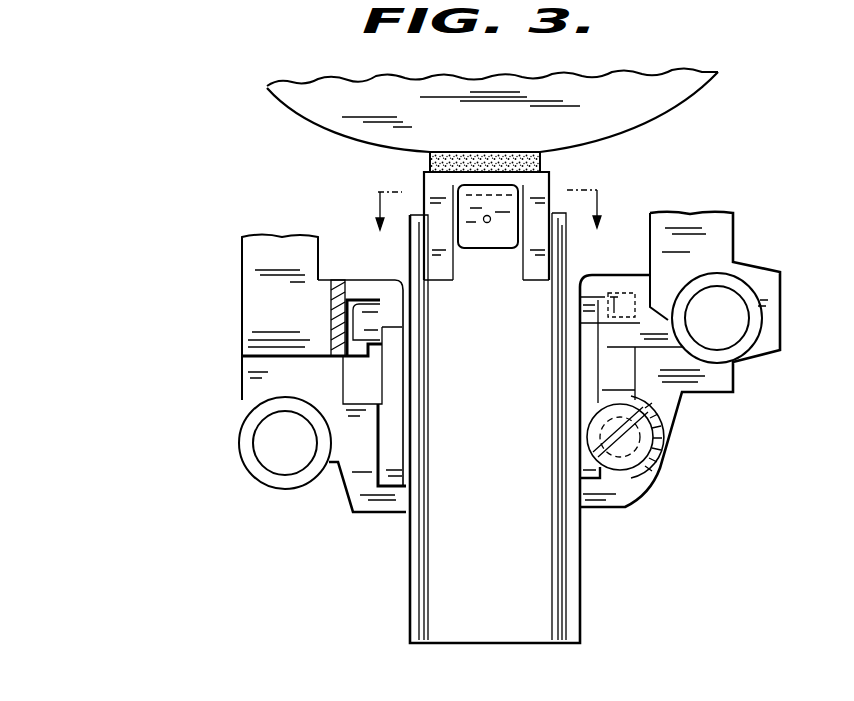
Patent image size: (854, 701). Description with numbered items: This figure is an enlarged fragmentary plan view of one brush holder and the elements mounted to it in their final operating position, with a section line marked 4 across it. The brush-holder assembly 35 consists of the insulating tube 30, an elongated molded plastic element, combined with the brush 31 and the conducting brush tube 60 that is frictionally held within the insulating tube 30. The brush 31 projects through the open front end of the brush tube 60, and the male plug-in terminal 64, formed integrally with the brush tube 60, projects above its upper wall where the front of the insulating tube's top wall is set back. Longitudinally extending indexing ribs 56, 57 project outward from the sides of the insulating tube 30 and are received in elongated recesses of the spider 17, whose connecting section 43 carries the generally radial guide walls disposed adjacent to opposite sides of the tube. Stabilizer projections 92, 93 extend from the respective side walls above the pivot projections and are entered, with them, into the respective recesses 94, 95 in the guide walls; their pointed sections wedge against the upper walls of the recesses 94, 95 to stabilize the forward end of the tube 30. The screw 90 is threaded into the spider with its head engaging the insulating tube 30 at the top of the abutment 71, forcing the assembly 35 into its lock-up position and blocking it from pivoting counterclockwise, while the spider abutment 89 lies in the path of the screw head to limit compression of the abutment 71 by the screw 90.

The spider 17 is at (280, 492).
The insulating tube 30 is at (582, 592).
The brush 31 is at (550, 159).
The brush-holder assembly 35 is at (395, 594).
The connecting section 43 is at (362, 482).
The indexing rib 56 is at (383, 363).
The indexing rib 57 is at (592, 371).
The conducting brush tube 60 is at (553, 181).
The male plug-in terminal 64 is at (492, 250).
The abutment 71 is at (607, 507).
The spider abutment 89 is at (655, 440).
The screw 90 is at (647, 460).
The stabilizer projection 92 is at (367, 318).
The stabilizer projection 93 is at (618, 290).
The recess 94 is at (366, 398).
The recess 95 is at (625, 389).
The section line 4- 4 is at (485, 222).